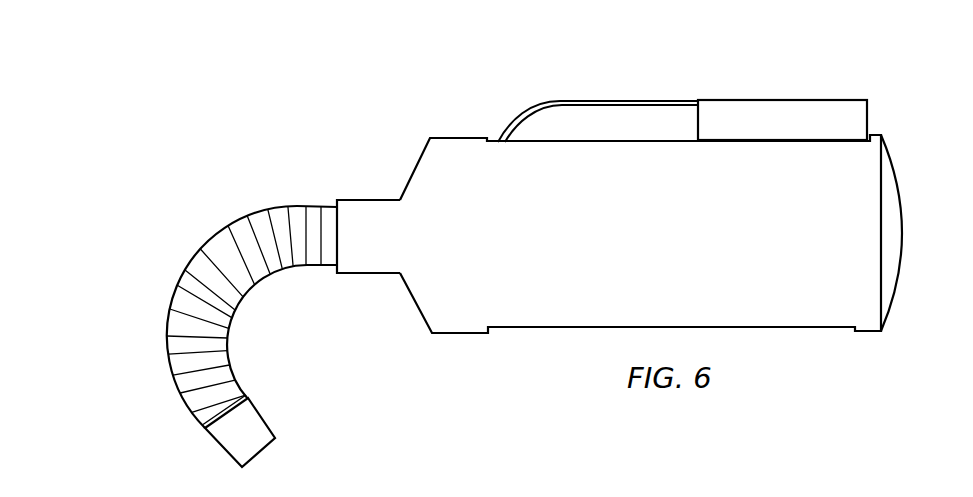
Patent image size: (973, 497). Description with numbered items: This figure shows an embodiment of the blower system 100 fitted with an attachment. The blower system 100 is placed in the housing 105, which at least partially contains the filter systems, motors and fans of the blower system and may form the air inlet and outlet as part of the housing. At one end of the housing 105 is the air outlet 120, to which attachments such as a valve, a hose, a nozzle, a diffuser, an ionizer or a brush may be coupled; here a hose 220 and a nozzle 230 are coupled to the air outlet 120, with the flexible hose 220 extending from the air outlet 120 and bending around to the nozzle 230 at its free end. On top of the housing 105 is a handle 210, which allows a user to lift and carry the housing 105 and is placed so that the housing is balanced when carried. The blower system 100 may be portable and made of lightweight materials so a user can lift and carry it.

The blower system 100 is at (545, 255).
The housing 105 is at (851, 318).
The air outlet 120 is at (363, 275).
The handle 210 is at (597, 102).
The hose 220 is at (231, 315).
The nozzle 230 is at (260, 420).